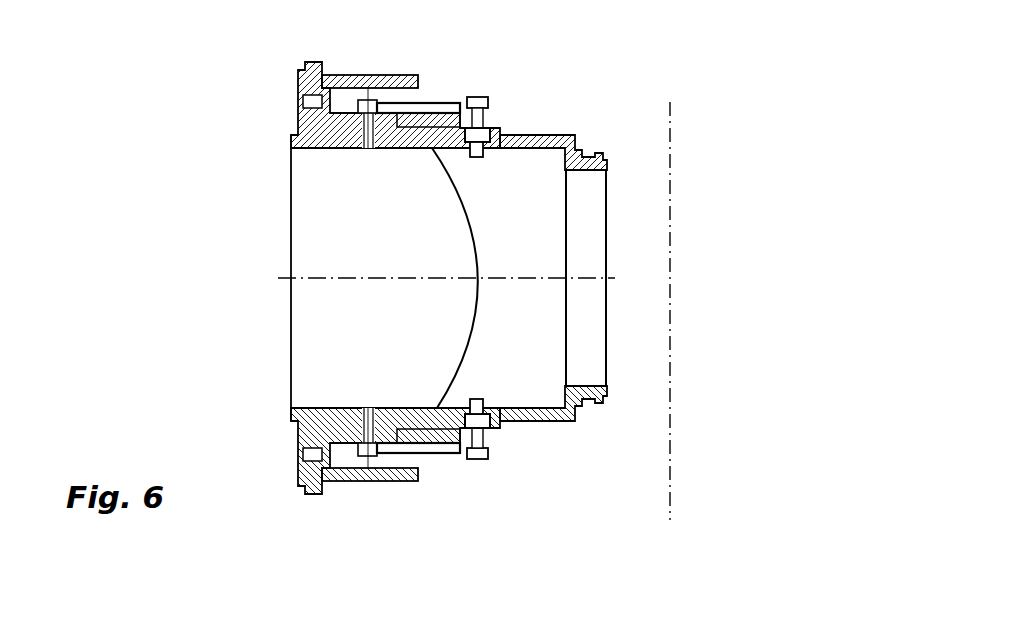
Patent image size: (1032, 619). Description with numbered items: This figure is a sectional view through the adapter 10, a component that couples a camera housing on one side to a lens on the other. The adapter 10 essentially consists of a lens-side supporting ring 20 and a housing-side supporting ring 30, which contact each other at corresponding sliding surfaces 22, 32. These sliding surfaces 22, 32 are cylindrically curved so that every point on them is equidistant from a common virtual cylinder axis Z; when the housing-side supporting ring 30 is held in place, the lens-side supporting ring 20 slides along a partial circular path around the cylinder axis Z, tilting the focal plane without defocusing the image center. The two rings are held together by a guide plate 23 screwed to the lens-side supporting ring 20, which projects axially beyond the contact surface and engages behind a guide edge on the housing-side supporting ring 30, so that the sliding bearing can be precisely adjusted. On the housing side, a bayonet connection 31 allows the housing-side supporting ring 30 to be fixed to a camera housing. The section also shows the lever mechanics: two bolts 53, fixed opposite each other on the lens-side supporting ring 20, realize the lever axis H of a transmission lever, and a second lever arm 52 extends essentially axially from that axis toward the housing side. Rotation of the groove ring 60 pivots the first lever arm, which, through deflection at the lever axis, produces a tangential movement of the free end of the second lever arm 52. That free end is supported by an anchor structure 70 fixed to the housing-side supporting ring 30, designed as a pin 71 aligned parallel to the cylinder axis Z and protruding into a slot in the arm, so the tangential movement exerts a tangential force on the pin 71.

The adapter 10 is at (226, 340).
The lens-side supporting ring 20 is at (313, 103).
The sliding surface 22 is at (473, 230).
The guide plate 23 is at (432, 147).
The housing-side supporting ring 30 is at (543, 143).
The bayonet connection 31 is at (593, 189).
The sliding surface 32 is at (455, 381).
The second lever arm 52 is at (422, 112).
The bolt 53 is at (362, 98).
The groove ring 60 is at (378, 82).
The anchor structure 70 is at (478, 110).
The pin 71 is at (480, 447).
The virtual cylinder axis Z is at (670, 298).